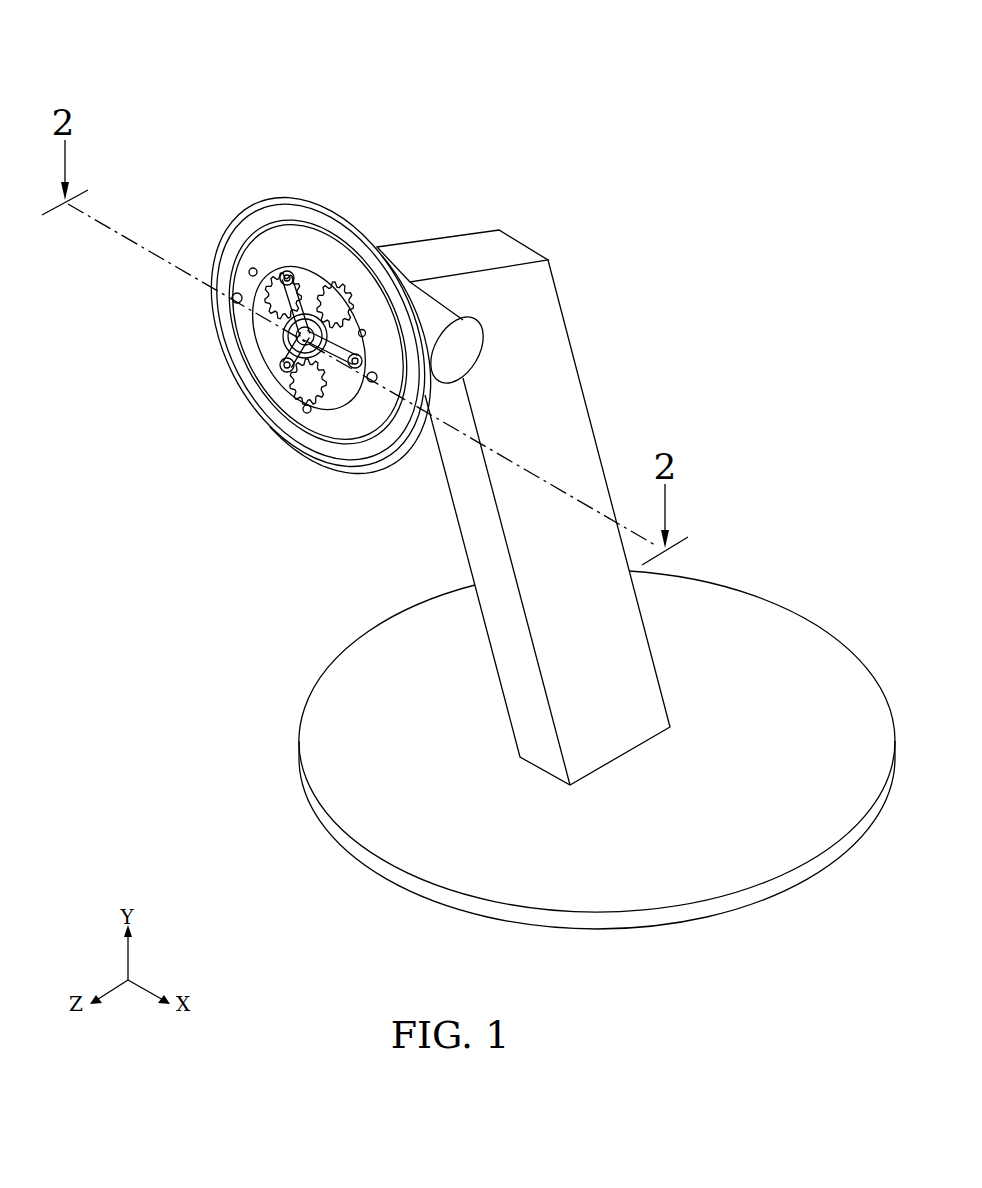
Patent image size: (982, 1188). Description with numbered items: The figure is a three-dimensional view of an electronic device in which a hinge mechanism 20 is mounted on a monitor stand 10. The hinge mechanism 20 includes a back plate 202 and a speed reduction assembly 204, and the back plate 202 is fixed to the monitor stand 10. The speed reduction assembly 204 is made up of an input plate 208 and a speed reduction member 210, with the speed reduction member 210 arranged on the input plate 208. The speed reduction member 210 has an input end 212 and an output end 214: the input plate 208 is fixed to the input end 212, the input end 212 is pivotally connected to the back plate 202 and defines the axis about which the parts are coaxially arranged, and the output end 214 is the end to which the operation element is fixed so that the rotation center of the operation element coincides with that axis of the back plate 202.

The monitor stand 10 is at (525, 305).
The hinge mechanism 20 is at (297, 258).
The back plate 202 is at (380, 246).
The speed reduction assembly 204 is at (85, 248).
The input plate 208 is at (213, 324).
The speed reduction member 210 is at (258, 284).
The input end 212 is at (285, 367).
The output end 214 is at (373, 381).